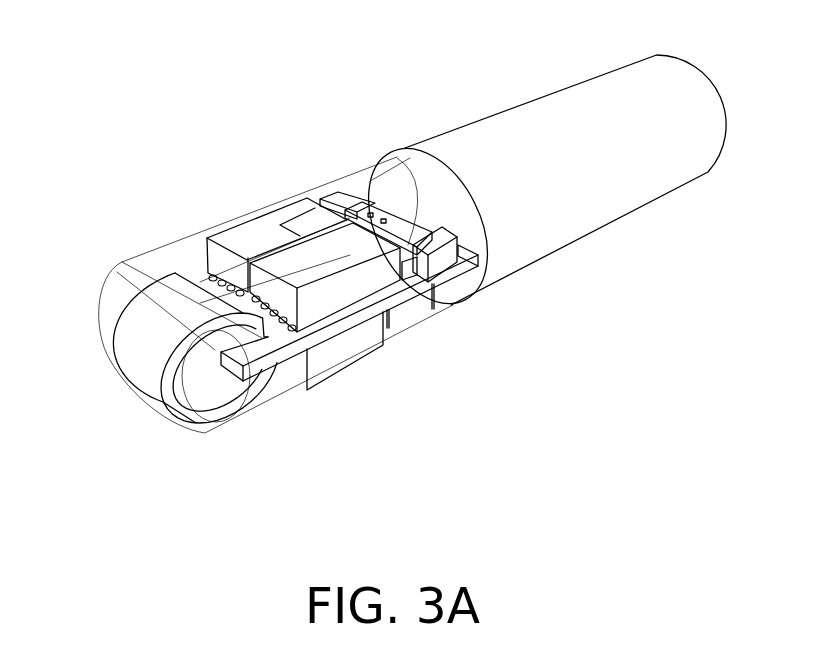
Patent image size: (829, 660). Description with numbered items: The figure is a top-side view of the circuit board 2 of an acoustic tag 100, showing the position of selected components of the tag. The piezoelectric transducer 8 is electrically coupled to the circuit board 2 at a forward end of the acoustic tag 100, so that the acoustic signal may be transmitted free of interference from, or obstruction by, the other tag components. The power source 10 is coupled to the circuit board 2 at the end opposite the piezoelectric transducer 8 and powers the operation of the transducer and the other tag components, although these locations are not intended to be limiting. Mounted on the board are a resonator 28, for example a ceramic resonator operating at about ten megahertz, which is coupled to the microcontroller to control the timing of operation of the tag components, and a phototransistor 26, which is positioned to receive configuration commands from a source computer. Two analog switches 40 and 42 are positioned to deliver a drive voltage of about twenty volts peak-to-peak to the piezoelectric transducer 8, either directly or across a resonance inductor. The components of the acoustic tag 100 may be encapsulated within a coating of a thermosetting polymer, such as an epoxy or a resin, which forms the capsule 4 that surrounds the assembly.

The acoustic tag 100 is at (148, 91).
The circuit board 2 is at (263, 367).
The capsule 4 is at (142, 255).
The piezoelectric transducer 8 is at (153, 342).
The power source 10 is at (617, 163).
The phototransistor 26 is at (352, 197).
The resonator 28 is at (435, 253).
The analog switch 40 is at (357, 297).
The analog switch 42 is at (253, 232).